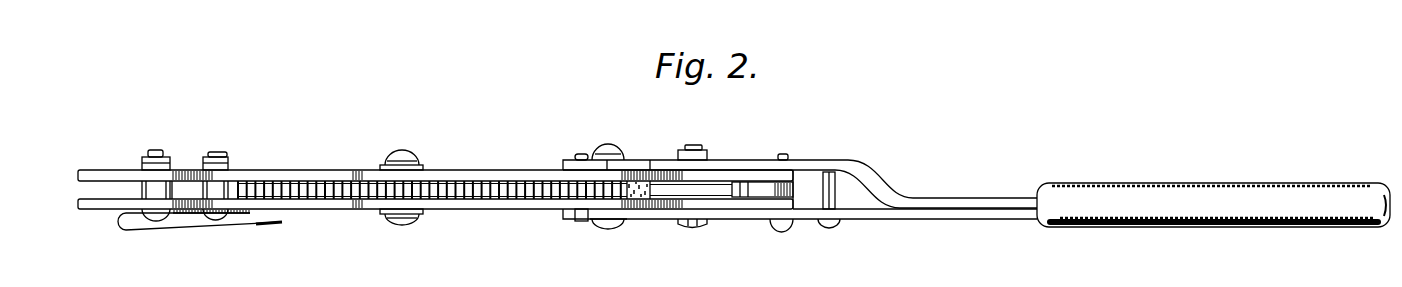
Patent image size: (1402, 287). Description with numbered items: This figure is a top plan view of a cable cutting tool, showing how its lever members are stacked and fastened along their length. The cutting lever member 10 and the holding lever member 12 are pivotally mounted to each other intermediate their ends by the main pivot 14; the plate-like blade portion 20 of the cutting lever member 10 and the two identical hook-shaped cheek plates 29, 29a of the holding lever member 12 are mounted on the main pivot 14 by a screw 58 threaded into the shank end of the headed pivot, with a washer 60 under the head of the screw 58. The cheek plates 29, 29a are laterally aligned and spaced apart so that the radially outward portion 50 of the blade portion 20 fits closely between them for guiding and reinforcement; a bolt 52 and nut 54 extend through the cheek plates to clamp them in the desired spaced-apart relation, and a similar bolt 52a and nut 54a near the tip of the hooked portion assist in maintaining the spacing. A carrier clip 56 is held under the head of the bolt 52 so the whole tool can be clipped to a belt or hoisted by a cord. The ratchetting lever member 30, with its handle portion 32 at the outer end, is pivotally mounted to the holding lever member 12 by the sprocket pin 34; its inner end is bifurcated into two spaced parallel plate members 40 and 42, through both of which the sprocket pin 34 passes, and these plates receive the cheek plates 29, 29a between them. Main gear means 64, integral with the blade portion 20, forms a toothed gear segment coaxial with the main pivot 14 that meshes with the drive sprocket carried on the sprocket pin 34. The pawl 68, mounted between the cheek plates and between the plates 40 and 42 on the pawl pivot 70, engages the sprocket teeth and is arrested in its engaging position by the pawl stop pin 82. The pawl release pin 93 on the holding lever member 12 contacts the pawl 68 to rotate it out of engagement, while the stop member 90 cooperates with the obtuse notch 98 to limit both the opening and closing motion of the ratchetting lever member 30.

The cutting lever member 10 is at (525, 191).
The holding lever member 12 is at (487, 171).
The main pivot 14 is at (402, 224).
The blade portion 20 is at (467, 199).
The cheek plate 29 is at (338, 209).
The cheek plate 29a is at (357, 157).
The ratchetting lever member 30 is at (1003, 172).
The handle portion 32 is at (1120, 188).
The sprocket pin 34 is at (622, 229).
The plate member 40 is at (743, 160).
The plate member 42 is at (753, 222).
The radially outward portion 50 is at (193, 190).
The bolt 52 is at (217, 153).
The bolt 52a is at (152, 152).
The nut 54 is at (228, 163).
The nut 54a is at (143, 153).
The carrier clip 56 is at (187, 227).
The screw 58 is at (408, 150).
The washer 60 is at (423, 168).
The main gear means 64 is at (317, 189).
The pawl 68 is at (763, 183).
The pawl pivot 70 is at (687, 224).
The pawl stop pin 82 is at (795, 198).
The stop member 90 is at (580, 155).
The pawl release pin 93 is at (643, 183).
The obtuse notch 98 is at (632, 163).